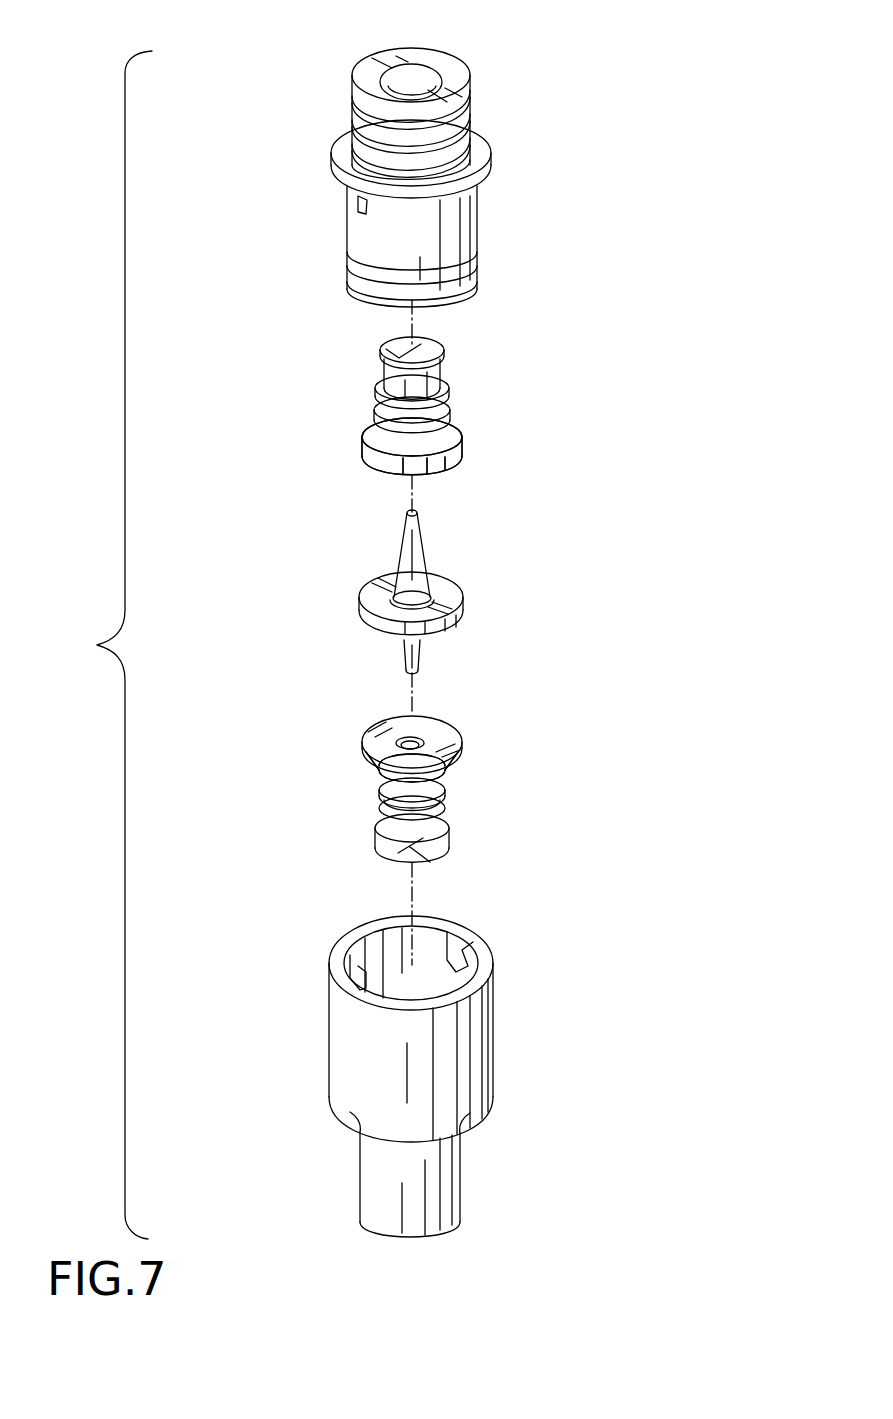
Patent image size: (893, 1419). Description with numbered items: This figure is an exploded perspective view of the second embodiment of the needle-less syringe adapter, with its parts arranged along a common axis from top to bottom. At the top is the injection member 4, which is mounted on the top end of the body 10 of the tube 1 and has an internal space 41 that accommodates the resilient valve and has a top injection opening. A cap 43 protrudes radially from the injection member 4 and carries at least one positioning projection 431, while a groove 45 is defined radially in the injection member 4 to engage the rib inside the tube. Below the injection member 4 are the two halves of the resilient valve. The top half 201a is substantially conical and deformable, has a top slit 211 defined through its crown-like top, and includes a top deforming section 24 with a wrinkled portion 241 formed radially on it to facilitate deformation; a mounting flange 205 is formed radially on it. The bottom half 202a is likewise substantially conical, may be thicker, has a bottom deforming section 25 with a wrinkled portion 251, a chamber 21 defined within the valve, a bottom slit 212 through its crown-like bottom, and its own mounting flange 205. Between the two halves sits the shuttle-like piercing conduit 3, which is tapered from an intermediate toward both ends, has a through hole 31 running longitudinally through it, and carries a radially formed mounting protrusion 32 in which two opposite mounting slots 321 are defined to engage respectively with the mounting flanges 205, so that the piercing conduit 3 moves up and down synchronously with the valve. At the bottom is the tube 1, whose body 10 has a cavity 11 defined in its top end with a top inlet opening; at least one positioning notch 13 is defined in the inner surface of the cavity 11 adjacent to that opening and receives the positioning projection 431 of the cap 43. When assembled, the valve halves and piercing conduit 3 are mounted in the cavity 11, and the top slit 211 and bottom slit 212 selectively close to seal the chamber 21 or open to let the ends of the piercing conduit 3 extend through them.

The tube 1 is at (407, 1076).
The body 10 is at (485, 1087).
The cavity 11 is at (443, 985).
The positioning notch 13 is at (363, 970).
The piercing conduit 3 is at (390, 588).
The through hole 31 is at (420, 513).
The mounting protrusion 32 is at (460, 623).
The mounting slot 321 is at (447, 590).
The injection member 4 is at (397, 170).
The internal space 41 is at (432, 74).
The cap 43 is at (343, 170).
The positioning projection 431 is at (366, 213).
The groove 45 is at (453, 277).
The top half 201a is at (378, 389).
The top slit 211 is at (382, 347).
The top deforming section 24 is at (440, 380).
The wrinkled portion 241 is at (447, 410).
The mounting flange 205 is at (453, 463).
The bottom half 202a is at (357, 790).
The chamber 21 is at (427, 742).
The bottom deforming section 25 is at (443, 797).
The wrinkled portion 251 is at (390, 793).
The bottom slit 212 is at (423, 862).